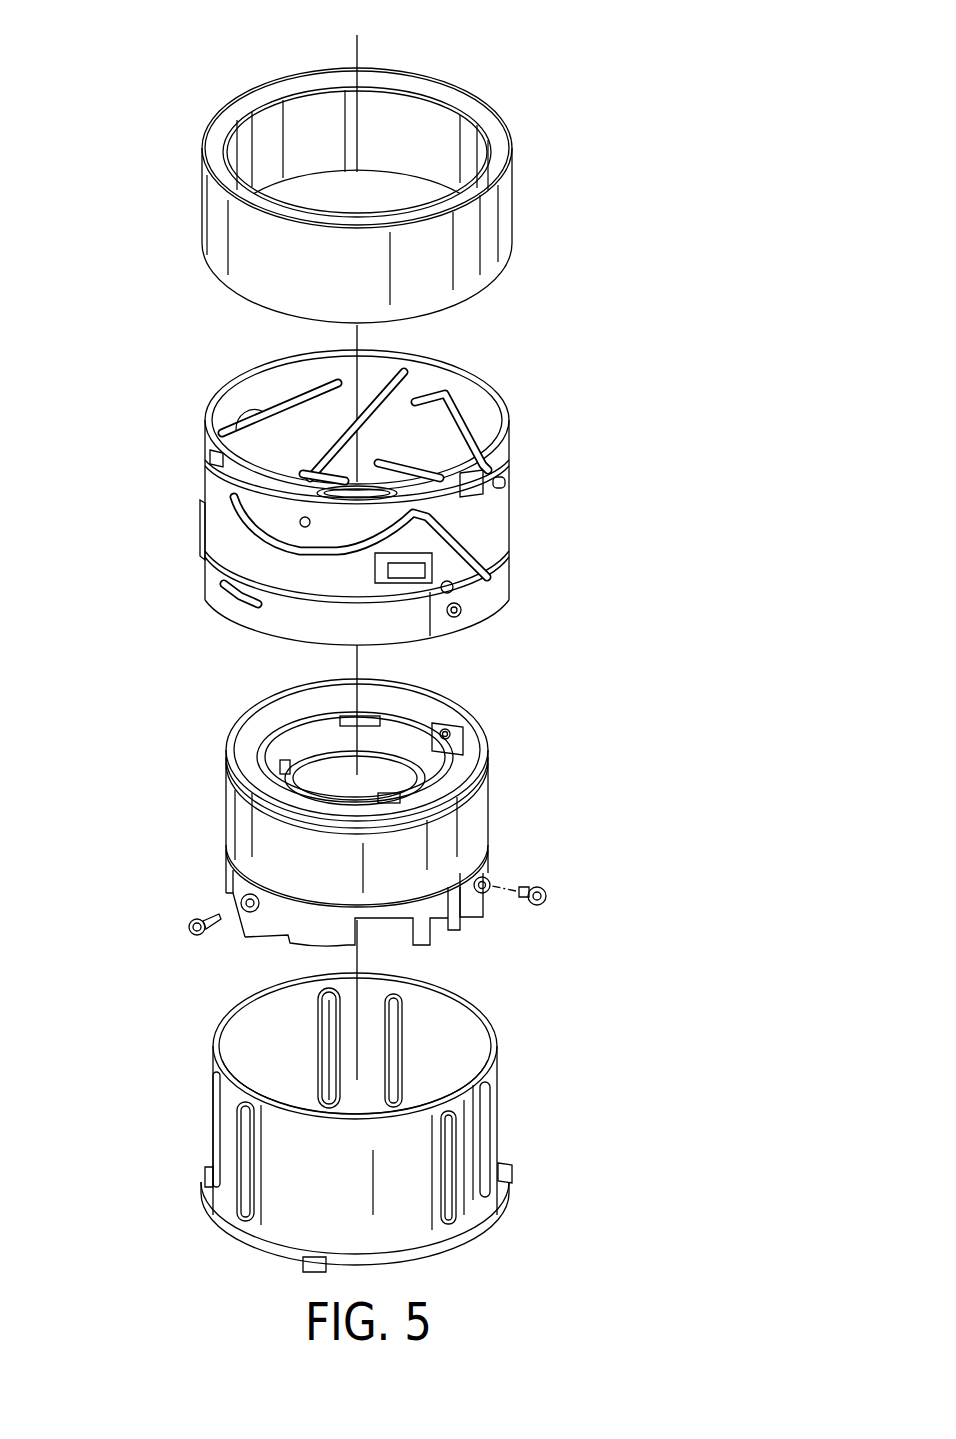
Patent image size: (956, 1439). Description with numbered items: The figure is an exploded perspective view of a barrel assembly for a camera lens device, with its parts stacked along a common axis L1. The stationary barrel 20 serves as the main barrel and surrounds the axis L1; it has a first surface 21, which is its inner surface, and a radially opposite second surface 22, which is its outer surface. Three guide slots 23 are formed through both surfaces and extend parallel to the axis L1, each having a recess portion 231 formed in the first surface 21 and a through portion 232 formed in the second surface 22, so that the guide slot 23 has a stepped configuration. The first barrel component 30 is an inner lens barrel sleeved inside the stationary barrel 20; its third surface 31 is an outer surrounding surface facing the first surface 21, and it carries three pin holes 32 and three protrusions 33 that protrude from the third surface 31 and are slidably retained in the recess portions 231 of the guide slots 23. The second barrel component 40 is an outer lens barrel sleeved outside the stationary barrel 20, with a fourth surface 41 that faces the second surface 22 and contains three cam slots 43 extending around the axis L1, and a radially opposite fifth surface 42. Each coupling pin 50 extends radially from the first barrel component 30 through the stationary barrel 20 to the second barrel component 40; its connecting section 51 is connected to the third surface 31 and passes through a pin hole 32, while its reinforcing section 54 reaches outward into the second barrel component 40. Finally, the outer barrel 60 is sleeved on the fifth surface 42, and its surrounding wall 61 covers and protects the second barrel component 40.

The axis L1 is at (357, 540).
The stationary barrel 20 is at (379, 1109).
The first surface 21 is at (472, 1044).
The second surface 22 is at (493, 1078).
The guide slot 23 is at (355, 1088).
The recess portion 231 is at (344, 1021).
The through portion 232 is at (327, 1060).
The first barrel component 30 is at (365, 839).
The third surface 31 is at (468, 805).
The pin hole 32 is at (248, 926).
The protrusion 33 is at (241, 884).
The second barrel component 40 is at (384, 480).
The fourth surface 41 is at (473, 410).
The fifth surface 42 is at (500, 513).
The cam slot 43 is at (416, 402).
The coupling pin 50 is at (365, 905).
The connecting section 51 is at (203, 917).
The reinforcing section 54 is at (189, 935).
The outer barrel 60 is at (366, 195).
The surrounding wall 61 is at (211, 205).